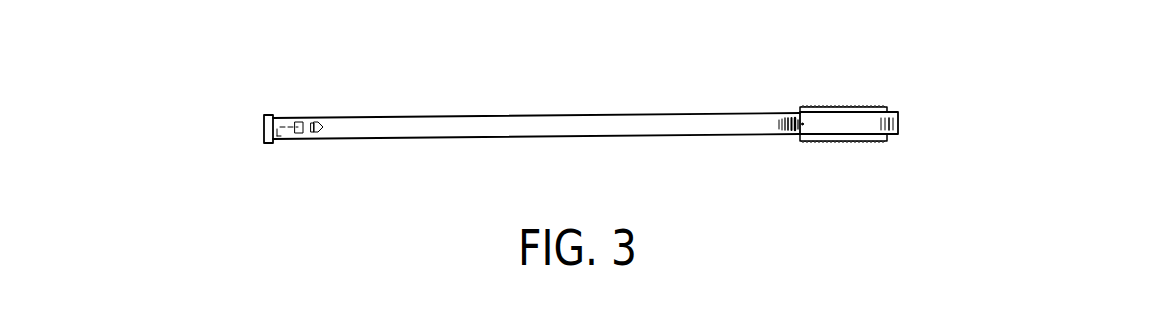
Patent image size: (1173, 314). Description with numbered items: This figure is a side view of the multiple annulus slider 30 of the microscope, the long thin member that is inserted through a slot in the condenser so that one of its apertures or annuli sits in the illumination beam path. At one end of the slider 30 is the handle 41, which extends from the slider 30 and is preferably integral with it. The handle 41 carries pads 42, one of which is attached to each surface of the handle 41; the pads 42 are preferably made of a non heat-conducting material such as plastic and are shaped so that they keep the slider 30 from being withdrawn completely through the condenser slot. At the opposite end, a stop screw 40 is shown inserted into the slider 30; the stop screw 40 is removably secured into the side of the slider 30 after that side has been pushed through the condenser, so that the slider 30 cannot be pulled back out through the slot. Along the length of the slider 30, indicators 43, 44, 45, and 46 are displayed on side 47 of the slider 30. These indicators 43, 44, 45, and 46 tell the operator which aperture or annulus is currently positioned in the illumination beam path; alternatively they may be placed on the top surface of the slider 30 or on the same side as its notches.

The slider 30 is at (742, 78).
The stop screw 40 is at (265, 128).
The handle 41 is at (863, 90).
The pads 42 is at (875, 108).
The indicator 43 is at (307, 118).
The indicator 44 is at (392, 117).
The indicator 45 is at (438, 117).
The indicator 46 is at (493, 117).
The side of slider 47 is at (575, 127).